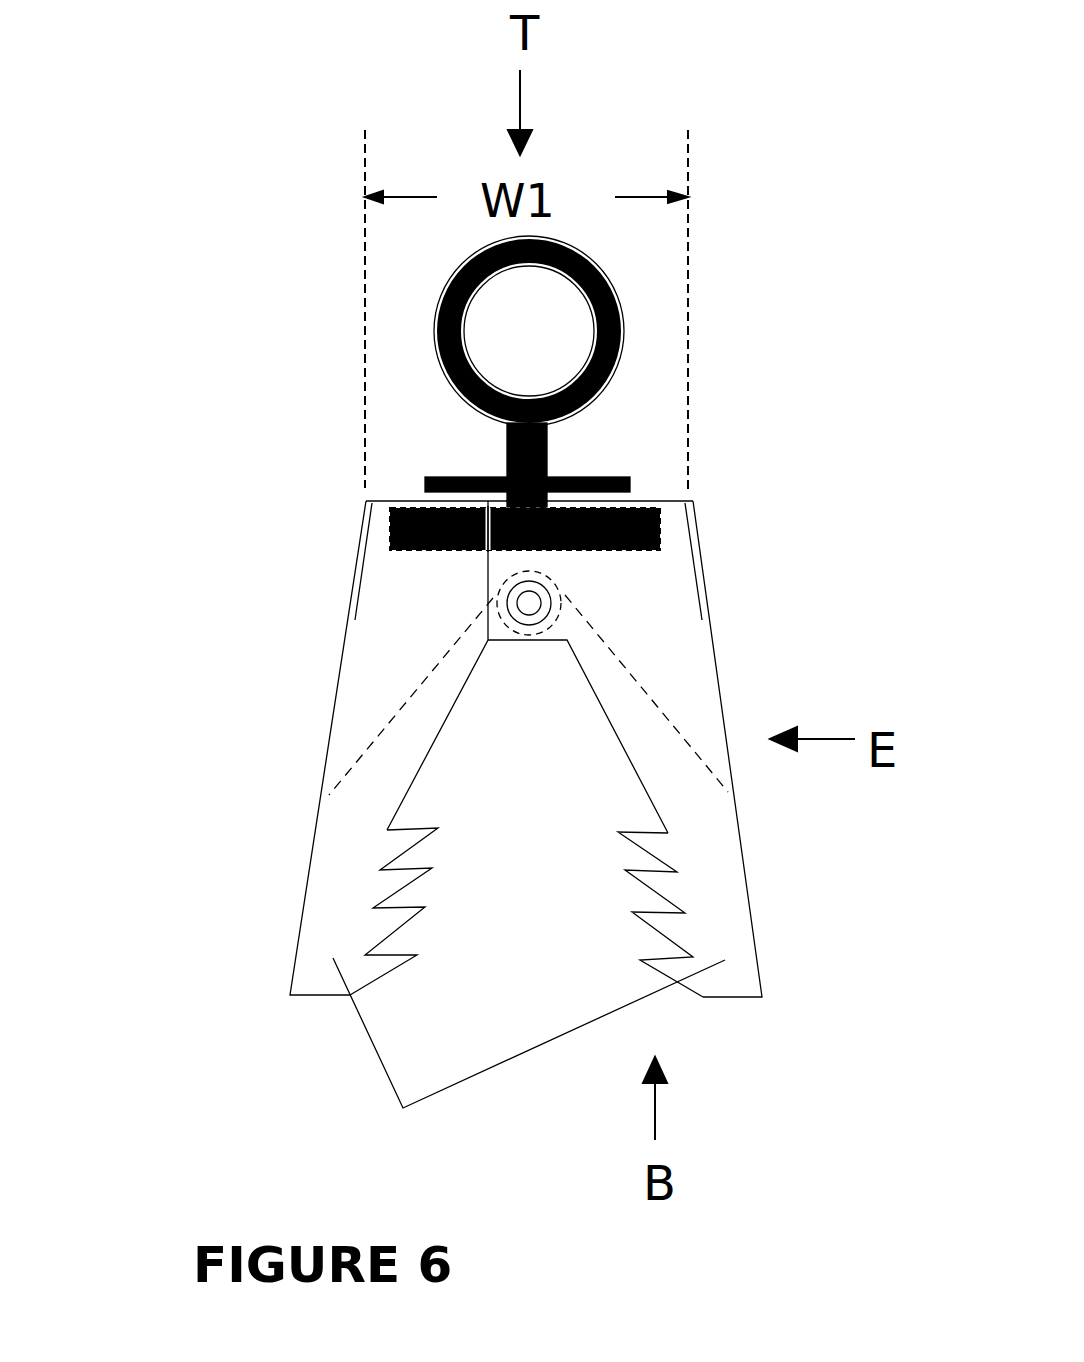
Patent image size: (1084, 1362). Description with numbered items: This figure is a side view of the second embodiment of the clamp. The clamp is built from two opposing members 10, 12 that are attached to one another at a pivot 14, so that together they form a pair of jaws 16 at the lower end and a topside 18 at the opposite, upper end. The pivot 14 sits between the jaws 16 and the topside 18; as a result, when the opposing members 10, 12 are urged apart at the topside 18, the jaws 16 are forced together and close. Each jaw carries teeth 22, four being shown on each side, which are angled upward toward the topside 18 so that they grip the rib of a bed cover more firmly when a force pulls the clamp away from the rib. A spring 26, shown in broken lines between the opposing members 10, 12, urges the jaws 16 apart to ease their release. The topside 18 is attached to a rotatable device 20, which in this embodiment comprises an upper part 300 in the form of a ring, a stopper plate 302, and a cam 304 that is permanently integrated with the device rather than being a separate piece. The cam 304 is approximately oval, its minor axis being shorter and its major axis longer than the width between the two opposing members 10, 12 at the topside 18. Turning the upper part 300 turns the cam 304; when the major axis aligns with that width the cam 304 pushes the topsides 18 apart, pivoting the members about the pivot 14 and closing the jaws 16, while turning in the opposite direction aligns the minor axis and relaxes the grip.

The opposing member 10 is at (377, 652).
The opposing member 12 is at (683, 657).
The pivot 14 is at (530, 600).
The jaws 16 is at (529, 1070).
The topside 18 is at (392, 488).
The rotatable device 20 is at (558, 356).
The teeth 22 is at (655, 890).
The spring 26 is at (362, 752).
The upper part 300 is at (602, 363).
The stopper plate 302 is at (587, 477).
The cam 304 is at (420, 530).